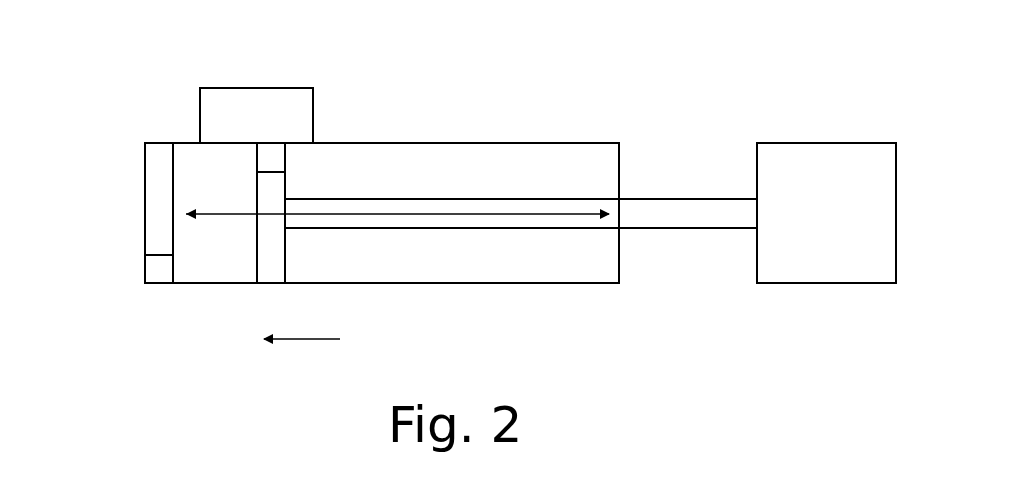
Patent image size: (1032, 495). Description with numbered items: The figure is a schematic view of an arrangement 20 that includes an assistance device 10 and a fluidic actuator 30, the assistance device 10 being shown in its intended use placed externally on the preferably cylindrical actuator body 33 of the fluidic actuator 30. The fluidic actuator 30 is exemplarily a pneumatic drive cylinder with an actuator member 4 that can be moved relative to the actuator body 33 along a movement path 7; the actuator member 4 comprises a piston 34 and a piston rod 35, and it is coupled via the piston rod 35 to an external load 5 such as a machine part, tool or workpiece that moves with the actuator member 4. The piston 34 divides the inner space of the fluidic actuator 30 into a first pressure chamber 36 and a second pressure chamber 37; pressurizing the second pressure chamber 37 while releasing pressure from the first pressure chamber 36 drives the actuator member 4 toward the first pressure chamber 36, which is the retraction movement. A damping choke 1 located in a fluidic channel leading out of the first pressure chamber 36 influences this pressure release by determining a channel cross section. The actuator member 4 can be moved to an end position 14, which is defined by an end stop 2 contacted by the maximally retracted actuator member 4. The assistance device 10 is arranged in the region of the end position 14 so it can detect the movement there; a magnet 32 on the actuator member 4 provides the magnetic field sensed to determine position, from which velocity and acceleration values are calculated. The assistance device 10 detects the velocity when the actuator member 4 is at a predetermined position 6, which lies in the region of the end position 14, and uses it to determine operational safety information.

The arrangement 20 is at (123, 80).
The end position 14 is at (172, 134).
The assistance device 10 is at (256, 115).
The magnet 32 is at (272, 156).
The actuator body 33 is at (482, 142).
The movement path 7 is at (374, 213).
The actuator member 4 is at (517, 213).
The piston rod 35 is at (638, 208).
The piston 34 is at (277, 268).
The external load 5 is at (826, 213).
The fluidic actuator 30 is at (136, 208).
The first pressure chamber 36 is at (230, 213).
The second pressure chamber 37 is at (452, 248).
The end stop 2 is at (174, 228).
The damping choke 1 is at (157, 268).
The predetermined position 6 is at (181, 294).